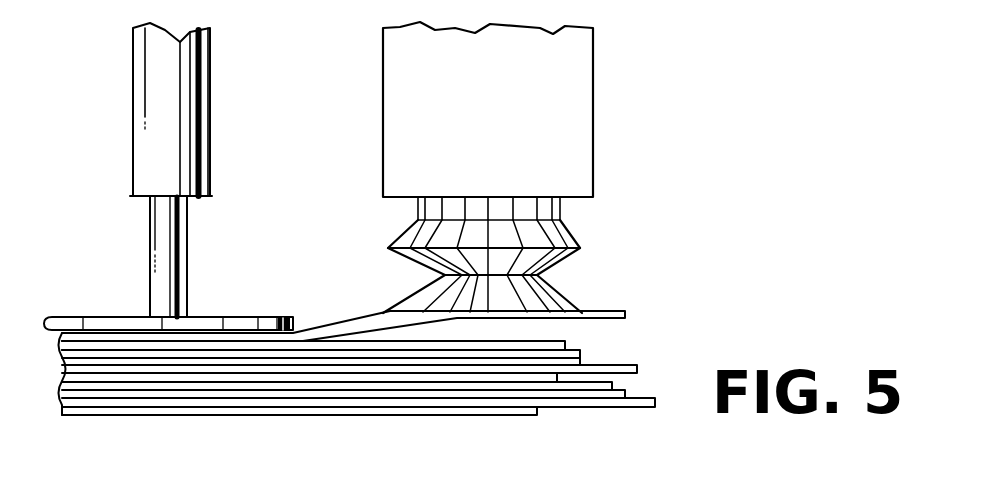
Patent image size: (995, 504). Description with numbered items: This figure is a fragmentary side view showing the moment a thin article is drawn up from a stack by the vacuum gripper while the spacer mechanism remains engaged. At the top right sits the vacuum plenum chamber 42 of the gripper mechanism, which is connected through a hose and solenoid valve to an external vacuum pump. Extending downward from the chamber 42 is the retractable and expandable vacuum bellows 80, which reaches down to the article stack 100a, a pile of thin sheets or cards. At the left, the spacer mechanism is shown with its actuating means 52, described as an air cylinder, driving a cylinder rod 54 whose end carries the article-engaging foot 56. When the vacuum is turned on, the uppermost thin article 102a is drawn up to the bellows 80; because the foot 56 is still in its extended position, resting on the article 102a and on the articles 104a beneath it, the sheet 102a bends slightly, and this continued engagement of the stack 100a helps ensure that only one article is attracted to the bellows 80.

The vacuum plenum chamber 42 is at (507, 108).
The actuating means 52 is at (210, 105).
The cylinder rod 54 is at (188, 245).
The article-engaging portion 56 is at (280, 317).
The vacuum bellows 80 is at (582, 246).
The article stack 100a is at (578, 424).
The uppermost thin article 102a is at (626, 311).
The article 104a is at (568, 346).